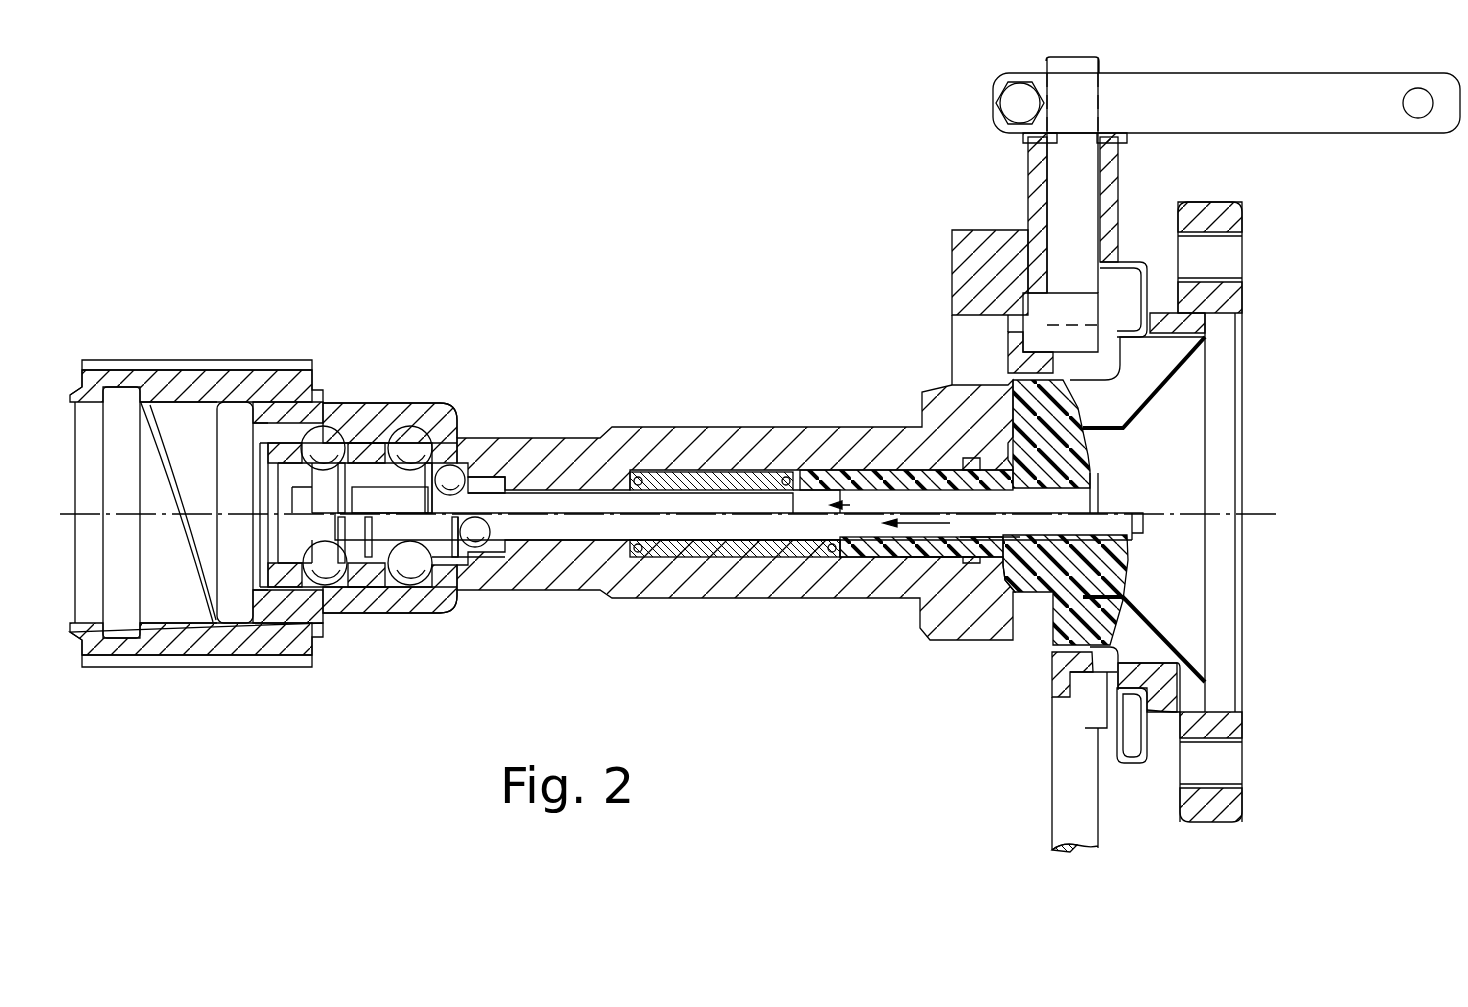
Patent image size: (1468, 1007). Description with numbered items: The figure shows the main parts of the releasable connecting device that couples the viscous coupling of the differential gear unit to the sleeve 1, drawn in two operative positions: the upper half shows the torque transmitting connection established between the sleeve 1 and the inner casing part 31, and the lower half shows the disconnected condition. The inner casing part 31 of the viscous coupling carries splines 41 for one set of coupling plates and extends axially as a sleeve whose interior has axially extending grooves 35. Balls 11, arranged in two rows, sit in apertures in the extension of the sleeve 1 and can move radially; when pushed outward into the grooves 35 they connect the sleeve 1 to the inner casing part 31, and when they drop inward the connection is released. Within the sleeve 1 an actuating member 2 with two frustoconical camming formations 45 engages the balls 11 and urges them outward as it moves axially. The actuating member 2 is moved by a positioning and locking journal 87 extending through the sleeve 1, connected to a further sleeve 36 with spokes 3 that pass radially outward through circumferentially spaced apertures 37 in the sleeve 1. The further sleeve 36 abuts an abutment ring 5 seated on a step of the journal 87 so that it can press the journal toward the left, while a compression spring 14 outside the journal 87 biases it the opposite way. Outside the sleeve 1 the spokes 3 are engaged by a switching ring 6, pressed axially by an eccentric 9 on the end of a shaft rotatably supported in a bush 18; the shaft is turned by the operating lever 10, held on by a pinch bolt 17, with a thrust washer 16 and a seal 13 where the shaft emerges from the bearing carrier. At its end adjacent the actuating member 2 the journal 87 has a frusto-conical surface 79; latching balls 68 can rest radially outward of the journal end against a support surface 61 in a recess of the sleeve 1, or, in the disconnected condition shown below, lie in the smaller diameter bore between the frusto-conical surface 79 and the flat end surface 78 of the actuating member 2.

The sleeve 1 is at (548, 456).
The actuating member 2 is at (357, 493).
The spokes 3 is at (1090, 455).
The abutment ring 5 is at (848, 560).
The switching ring 6 is at (1008, 352).
The eccentric 9 is at (1033, 323).
The operating lever 10 is at (1272, 87).
The balls 11 is at (345, 543).
The seal 13 is at (1032, 152).
The compression spring 14 is at (715, 480).
The thrust washer 16 is at (1023, 138).
The pinch bolt 17 is at (1007, 97).
The bush 18 is at (1110, 190).
The inner casing part 31 is at (288, 385).
The grooves 35 is at (358, 424).
The further sleeve 36 is at (928, 560).
The apertures 37 is at (1150, 373).
The splines 41 is at (173, 360).
The camming formations 45 is at (330, 592).
The support surface 61 is at (462, 493).
The latching balls 68 is at (473, 547).
The flat end surface 78 is at (472, 555).
The frusto-conical surface 79 is at (440, 502).
The positioning and locking journal 87 is at (995, 525).